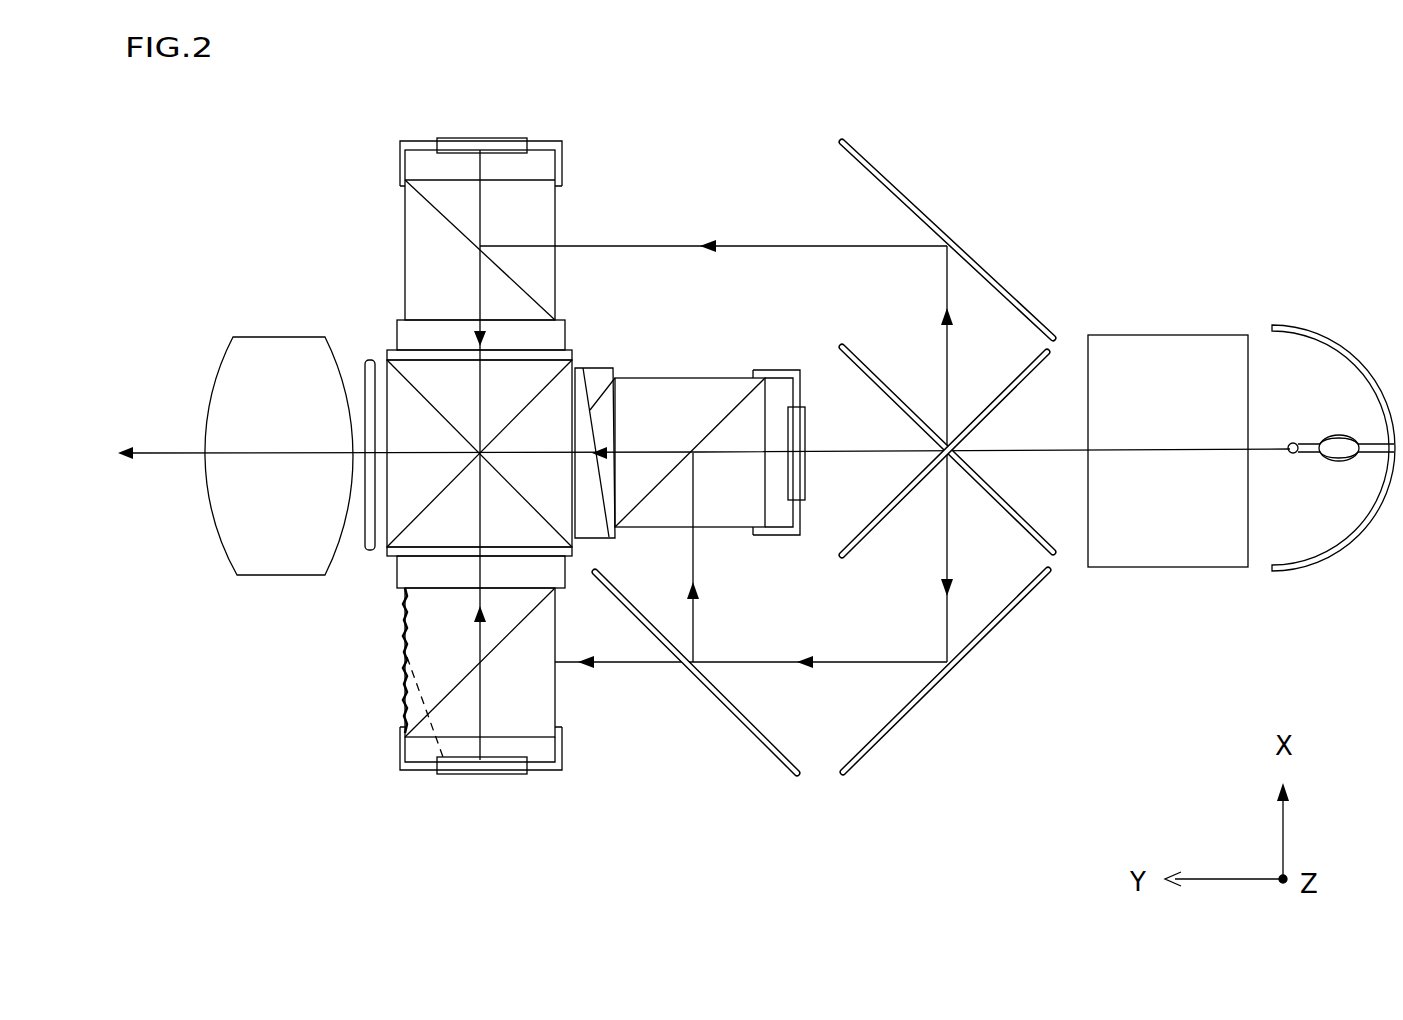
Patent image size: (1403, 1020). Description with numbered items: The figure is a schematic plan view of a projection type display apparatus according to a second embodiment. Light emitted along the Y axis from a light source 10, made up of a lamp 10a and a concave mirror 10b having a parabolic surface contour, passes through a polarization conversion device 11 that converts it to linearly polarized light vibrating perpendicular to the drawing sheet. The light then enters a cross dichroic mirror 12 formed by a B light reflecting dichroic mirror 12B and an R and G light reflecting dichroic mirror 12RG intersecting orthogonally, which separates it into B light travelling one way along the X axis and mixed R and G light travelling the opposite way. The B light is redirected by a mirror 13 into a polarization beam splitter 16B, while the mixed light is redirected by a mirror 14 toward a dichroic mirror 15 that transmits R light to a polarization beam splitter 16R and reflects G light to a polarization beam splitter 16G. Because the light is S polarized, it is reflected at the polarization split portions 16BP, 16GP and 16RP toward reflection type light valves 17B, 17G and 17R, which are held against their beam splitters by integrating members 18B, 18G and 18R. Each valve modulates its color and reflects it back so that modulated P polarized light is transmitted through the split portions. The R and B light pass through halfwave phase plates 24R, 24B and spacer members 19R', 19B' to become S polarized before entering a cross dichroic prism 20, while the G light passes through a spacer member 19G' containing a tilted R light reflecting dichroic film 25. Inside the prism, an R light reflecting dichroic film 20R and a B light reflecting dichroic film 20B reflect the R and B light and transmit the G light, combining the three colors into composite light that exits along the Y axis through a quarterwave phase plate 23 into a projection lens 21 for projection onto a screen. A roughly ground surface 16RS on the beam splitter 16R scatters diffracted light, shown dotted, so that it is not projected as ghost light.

The light source 10 is at (1333, 458).
The lamp 10a is at (1296, 455).
The concave mirror 10b is at (1318, 338).
The polarization conversion device 11 is at (1162, 568).
The cross dichroic mirror 12 is at (999, 467).
The dichroic mirror 12RG is at (1044, 352).
The dichroic mirror 12B is at (1051, 559).
The mirror 13 is at (863, 153).
The mirror 14 is at (873, 747).
The dichroic mirror 15 is at (762, 755).
The polarization beam splitter 16B is at (471, 214).
The polarization split portion 16BP is at (418, 204).
The polarization beam splitter 16G is at (699, 453).
The polarization split portion 16GP is at (742, 400).
The polarization beam splitter 16R is at (475, 688).
The surface 16RS is at (402, 660).
The polarization split portion 16RP is at (405, 703).
The reflection type light valve 17B is at (502, 138).
The reflection type light valve 17G is at (806, 452).
The reflection type light valve 17R is at (483, 776).
The integrating member 18B is at (563, 152).
The integrating member 18G is at (797, 537).
The integrating member 18R is at (563, 745).
The spacer member 19B' is at (513, 307).
The spacer member 19G' is at (638, 338).
The spacer member 19R' is at (443, 602).
The cross dichroic prism 20 is at (418, 503).
The R light reflecting dichroic film 20R is at (428, 384).
The B light reflecting dichroic film 20B is at (428, 506).
The projection lens 21 is at (247, 572).
The quarterwave phase plate 23 is at (362, 358).
The halfwave phase plate 24B is at (398, 348).
The halfwave phase plate 24R is at (562, 568).
The R light reflecting dichroic film 25 is at (617, 370).